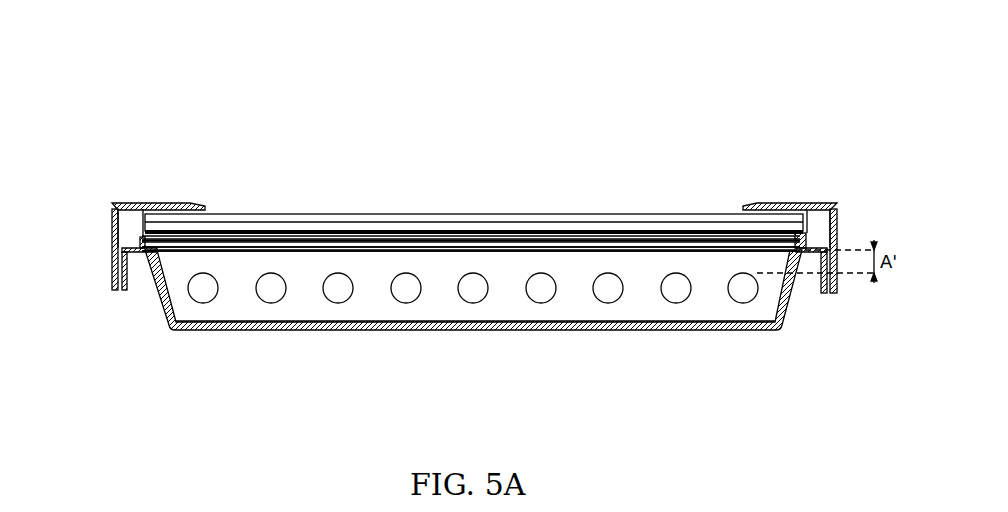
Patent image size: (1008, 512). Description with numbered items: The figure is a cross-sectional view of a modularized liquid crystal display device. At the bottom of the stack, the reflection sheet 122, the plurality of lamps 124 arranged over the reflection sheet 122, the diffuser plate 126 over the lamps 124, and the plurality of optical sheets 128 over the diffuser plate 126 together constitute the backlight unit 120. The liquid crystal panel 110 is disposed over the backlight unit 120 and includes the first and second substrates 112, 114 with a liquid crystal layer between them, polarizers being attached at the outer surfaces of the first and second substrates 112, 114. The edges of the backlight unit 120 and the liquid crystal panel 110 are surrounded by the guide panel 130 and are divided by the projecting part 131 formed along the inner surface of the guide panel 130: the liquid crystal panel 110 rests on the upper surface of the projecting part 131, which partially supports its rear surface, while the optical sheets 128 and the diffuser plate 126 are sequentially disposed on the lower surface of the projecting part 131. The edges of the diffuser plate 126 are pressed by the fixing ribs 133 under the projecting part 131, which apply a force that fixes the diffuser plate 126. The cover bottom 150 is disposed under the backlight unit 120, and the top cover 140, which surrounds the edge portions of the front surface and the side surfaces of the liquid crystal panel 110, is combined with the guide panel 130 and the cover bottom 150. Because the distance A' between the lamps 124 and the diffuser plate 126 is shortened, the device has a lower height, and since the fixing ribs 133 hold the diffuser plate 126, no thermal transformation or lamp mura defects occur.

The liquid crystal panel 110 is at (474, 173).
The first substrate 112 is at (422, 229).
The second substrate 114 is at (362, 215).
The backlight unit 120 is at (473, 337).
The reflection sheet 122 is at (525, 323).
The lamps 124 is at (477, 292).
The diffuser plate 126 is at (628, 248).
The optical sheets 128 is at (573, 248).
The guide panel 130 is at (112, 253).
The projecting part 131 is at (148, 256).
The fixing ribs 133 is at (130, 253).
The top cover 140 is at (178, 206).
The cover bottom 150 is at (224, 333).